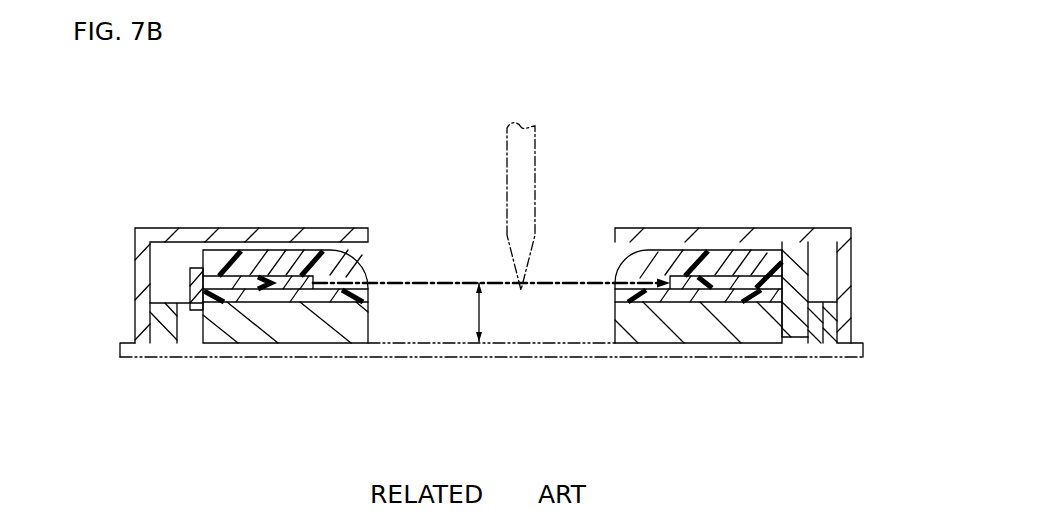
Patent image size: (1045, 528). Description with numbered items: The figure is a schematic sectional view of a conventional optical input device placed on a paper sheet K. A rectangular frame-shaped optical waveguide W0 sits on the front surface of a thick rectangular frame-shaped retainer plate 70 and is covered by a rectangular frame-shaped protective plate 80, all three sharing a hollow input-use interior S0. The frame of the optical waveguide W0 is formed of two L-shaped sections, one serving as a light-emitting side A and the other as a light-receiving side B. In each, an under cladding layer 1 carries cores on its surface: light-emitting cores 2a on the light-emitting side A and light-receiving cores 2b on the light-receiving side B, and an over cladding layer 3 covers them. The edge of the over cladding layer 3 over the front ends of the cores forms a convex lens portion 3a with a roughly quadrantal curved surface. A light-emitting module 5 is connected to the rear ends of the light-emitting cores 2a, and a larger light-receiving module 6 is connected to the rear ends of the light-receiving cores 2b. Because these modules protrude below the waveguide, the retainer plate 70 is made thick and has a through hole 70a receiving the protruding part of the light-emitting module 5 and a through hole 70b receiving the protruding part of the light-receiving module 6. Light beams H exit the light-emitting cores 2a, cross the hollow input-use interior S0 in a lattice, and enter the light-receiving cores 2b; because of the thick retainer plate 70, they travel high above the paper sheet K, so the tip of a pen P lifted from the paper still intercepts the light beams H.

The protective plate 80 is at (164, 229).
The light-emitting module 5 is at (195, 268).
The optical waveguide W0 is at (230, 252).
The light-emitting side A is at (383, 147).
The light-receiving side B is at (742, 147).
The under cladding layer 1 is at (250, 290).
The light-emitting cores 2a is at (282, 278).
The light-receiving cores 2b is at (722, 273).
The over cladding layer 3 is at (305, 265).
The convex lens portion 3a is at (354, 271).
The hollow input-use interior S0 is at (372, 234).
The pen P is at (515, 163).
The light beams H is at (497, 278).
The paper sheet K is at (517, 350).
The light-receiving module 6 is at (798, 248).
The retainer plate 70 is at (300, 328).
The through hole 70a is at (179, 320).
The through hole 70b is at (808, 342).